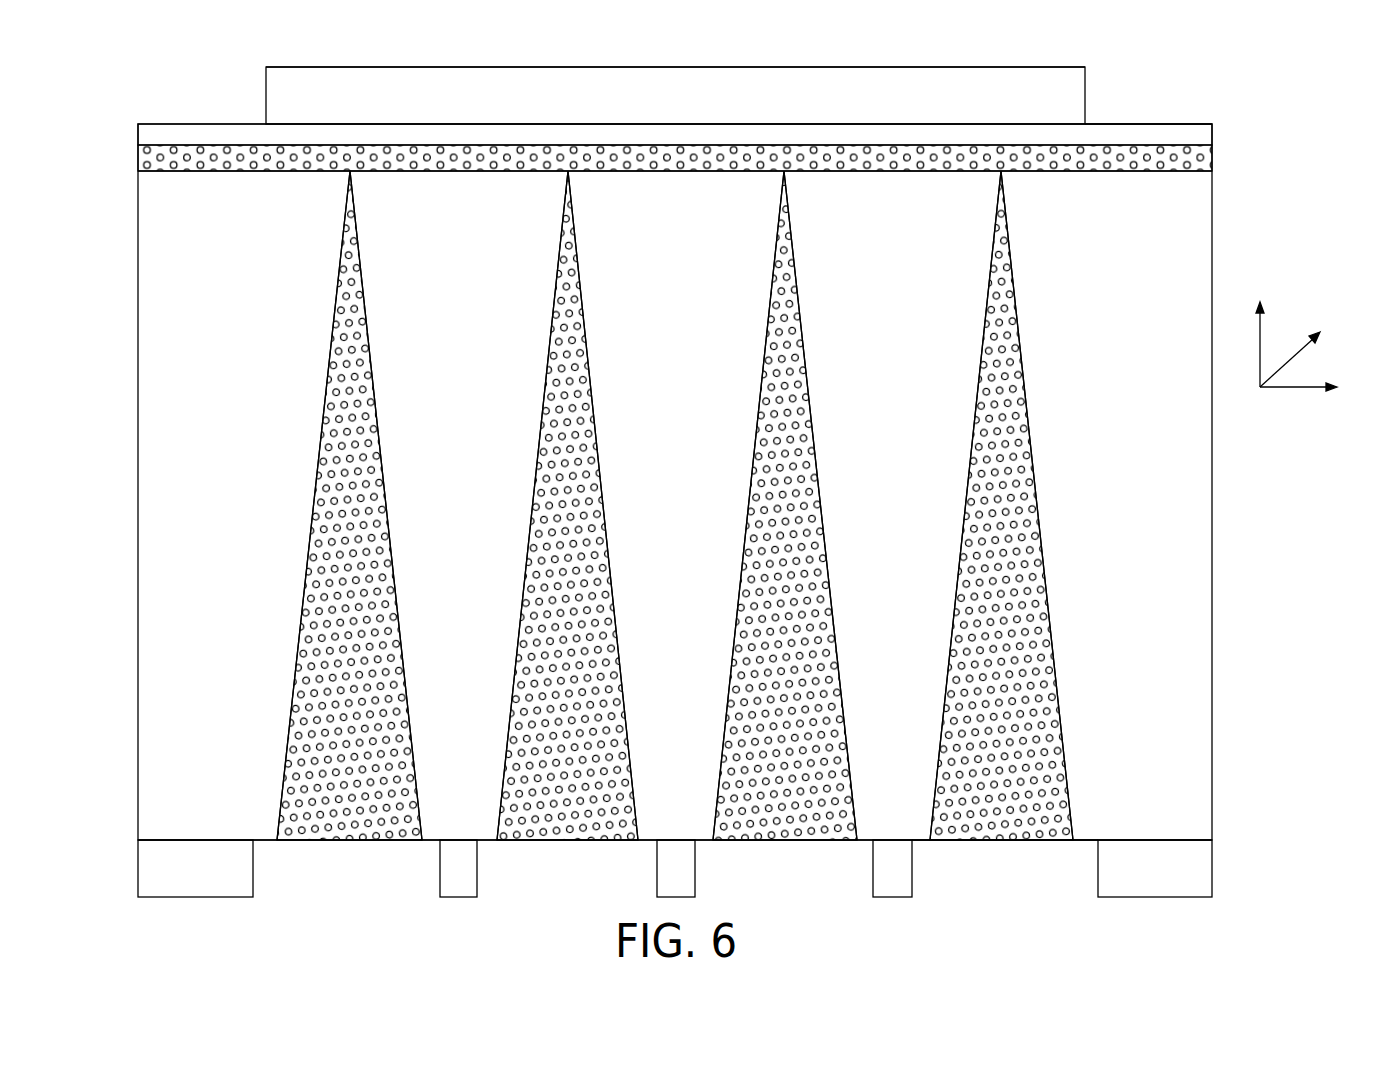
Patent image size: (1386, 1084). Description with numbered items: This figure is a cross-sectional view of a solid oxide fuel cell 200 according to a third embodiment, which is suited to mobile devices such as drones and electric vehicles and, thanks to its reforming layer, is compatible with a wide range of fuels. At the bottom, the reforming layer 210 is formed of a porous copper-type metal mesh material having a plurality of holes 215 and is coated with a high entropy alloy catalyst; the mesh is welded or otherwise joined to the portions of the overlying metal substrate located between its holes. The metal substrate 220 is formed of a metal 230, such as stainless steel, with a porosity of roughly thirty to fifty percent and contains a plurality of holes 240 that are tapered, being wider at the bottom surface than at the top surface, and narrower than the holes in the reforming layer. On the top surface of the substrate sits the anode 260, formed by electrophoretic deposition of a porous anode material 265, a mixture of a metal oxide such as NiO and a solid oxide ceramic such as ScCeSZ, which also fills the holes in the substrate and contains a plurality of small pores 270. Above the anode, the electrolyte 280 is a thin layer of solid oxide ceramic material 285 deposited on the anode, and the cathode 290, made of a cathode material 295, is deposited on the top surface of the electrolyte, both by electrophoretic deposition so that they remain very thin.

The solid oxide fuel cell 200 is at (191, 88).
The reforming layer 210 is at (1213, 870).
The holes 215 is at (1035, 875).
The metal substrate 220 is at (1212, 555).
The metal 230 is at (1162, 472).
The holes 240 is at (1052, 618).
The anode 260 is at (1190, 165).
The porous anode material 265 is at (1190, 170).
The pores 270 is at (1195, 158).
The electrolyte 280 is at (1212, 130).
The solid oxide ceramic material 285 is at (1182, 136).
The cathode 290 is at (1085, 106).
The cathode material 295 is at (1050, 83).